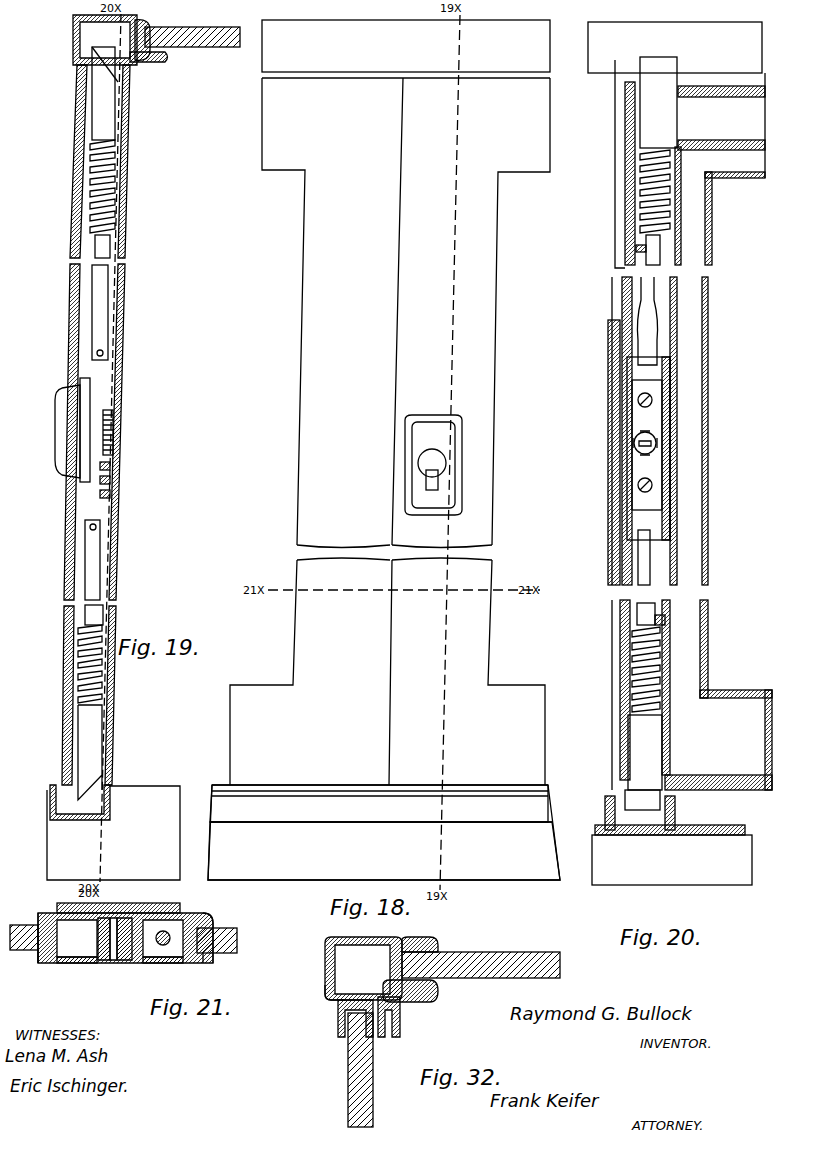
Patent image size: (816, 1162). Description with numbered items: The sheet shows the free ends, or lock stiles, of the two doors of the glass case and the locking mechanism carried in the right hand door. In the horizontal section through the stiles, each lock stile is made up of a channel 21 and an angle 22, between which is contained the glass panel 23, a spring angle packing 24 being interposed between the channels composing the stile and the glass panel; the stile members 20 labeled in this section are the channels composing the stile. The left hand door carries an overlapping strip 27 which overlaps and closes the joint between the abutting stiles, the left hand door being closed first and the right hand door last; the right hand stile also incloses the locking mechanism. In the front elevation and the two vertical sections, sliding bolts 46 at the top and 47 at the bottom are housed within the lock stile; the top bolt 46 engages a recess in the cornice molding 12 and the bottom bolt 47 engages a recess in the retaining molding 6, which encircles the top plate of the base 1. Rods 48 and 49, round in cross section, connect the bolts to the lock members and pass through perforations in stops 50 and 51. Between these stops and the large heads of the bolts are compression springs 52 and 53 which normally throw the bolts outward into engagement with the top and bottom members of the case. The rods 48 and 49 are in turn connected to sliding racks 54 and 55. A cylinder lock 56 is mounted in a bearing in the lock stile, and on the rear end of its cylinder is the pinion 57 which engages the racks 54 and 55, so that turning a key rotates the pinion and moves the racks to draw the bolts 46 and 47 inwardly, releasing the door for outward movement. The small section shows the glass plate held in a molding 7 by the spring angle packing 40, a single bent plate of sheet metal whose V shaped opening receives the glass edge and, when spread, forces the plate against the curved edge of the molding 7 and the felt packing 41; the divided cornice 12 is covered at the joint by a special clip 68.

In FIG. 18, the base 1 is at (552, 861).
In FIG. 19, the retaining molding 6 is at (50, 793).
In FIG. 18, the retaining molding 6 is at (550, 801).
In FIG. 20, the retaining molding 6 is at (678, 816).
In FIG. 32, the molding 7 is at (340, 1020).
In FIG. 19, the cornice molding 12 is at (73, 21).
In FIG. 18, the cornice molding 12 is at (548, 46).
In FIG. 20, the cornice molding 12 is at (762, 33).
In FIG. 32, the cornice molding 12 is at (325, 970).
In FIG. 21, the stile wall 20 is at (188, 915).
In FIG. 21, the channel 21 is at (212, 915).
In FIG. 21, the angle 22 is at (180, 965).
In FIG. 21, the glass panel 23 is at (215, 926).
In FIG. 21, the spring angle packing 24 is at (237, 936).
In FIG. 21, the overlapping strip 27 is at (160, 906).
In FIG. 32, the spring angle packing 40 is at (380, 1036).
In FIG. 21, the felt packing 41 is at (212, 963).
In FIG. 32, the felt packing 41 is at (348, 1032).
In FIG. 19, the sliding bolt 46 is at (116, 98).
In FIG. 20, the sliding bolt 46 is at (668, 110).
In FIG. 19, the sliding bolt 47 is at (100, 740).
In FIG. 20, the sliding bolt 47 is at (660, 740).
In FIG. 19, the rod 48 is at (106, 287).
In FIG. 20, the rod 48 is at (655, 290).
In FIG. 19, the rod 49 is at (103, 612).
In FIG. 20, the rod 49 is at (655, 612).
In FIG. 19, the stop 50 is at (112, 241).
In FIG. 20, the stop 50 is at (660, 250).
In FIG. 20, the stop 51 is at (665, 620).
In FIG. 19, the compression spring 52 is at (117, 162).
In FIG. 20, the compression spring 52 is at (662, 200).
In FIG. 19, the compression spring 53 is at (100, 676).
In FIG. 20, the compression spring 53 is at (660, 672).
In FIG. 19, the sliding rack 54 is at (112, 470).
In FIG. 20, the sliding rack 54 is at (670, 376).
In FIG. 20, the sliding rack 55 is at (610, 458).
In FIG. 19, the cylinder lock 56 is at (55, 436).
In FIG. 18, the cylinder lock 56 is at (450, 460).
In FIG. 19, the pinion 57 is at (115, 433).
In FIG. 20, the pinion 57 is at (658, 445).
In FIG. 32, the special clip 68 is at (325, 992).